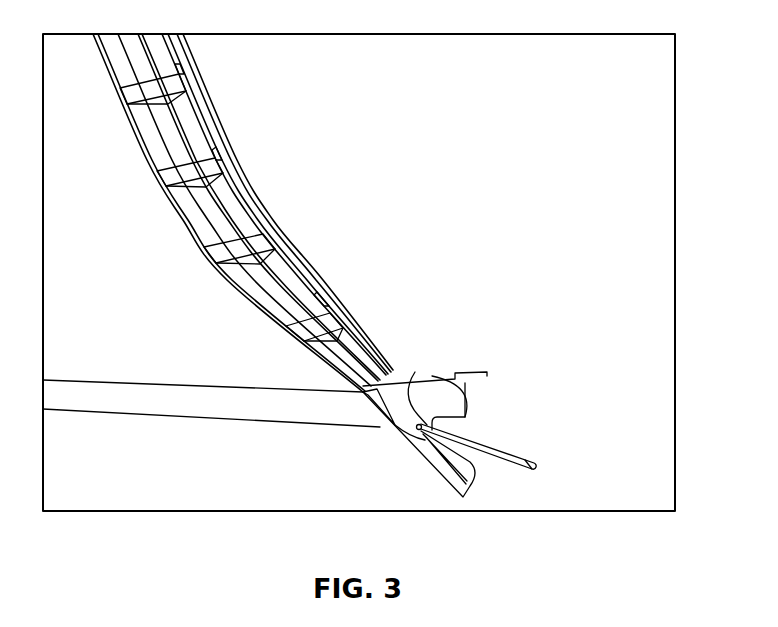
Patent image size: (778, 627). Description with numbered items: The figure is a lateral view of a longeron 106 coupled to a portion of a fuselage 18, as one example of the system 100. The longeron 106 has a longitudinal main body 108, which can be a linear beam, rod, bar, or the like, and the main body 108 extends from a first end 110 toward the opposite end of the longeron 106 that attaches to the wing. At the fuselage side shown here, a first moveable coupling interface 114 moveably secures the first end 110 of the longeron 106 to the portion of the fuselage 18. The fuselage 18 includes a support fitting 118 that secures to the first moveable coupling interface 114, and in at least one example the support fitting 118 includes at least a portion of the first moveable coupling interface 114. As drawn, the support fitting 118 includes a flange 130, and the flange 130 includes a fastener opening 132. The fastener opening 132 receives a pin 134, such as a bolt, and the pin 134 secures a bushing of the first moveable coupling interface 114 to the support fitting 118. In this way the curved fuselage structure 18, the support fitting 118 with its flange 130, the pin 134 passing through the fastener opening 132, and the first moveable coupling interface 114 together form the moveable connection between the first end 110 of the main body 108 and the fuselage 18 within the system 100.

The fuselage 18 is at (231, 300).
The system 100 is at (505, 488).
The longeron 106 is at (508, 453).
The main body 108 is at (477, 440).
The first end 110 is at (423, 426).
The first moveable coupling interface 114 is at (455, 493).
The support fitting 118 is at (405, 405).
The flange 130 is at (390, 435).
The fastener opening 132 is at (420, 372).
The pin 134 is at (415, 447).